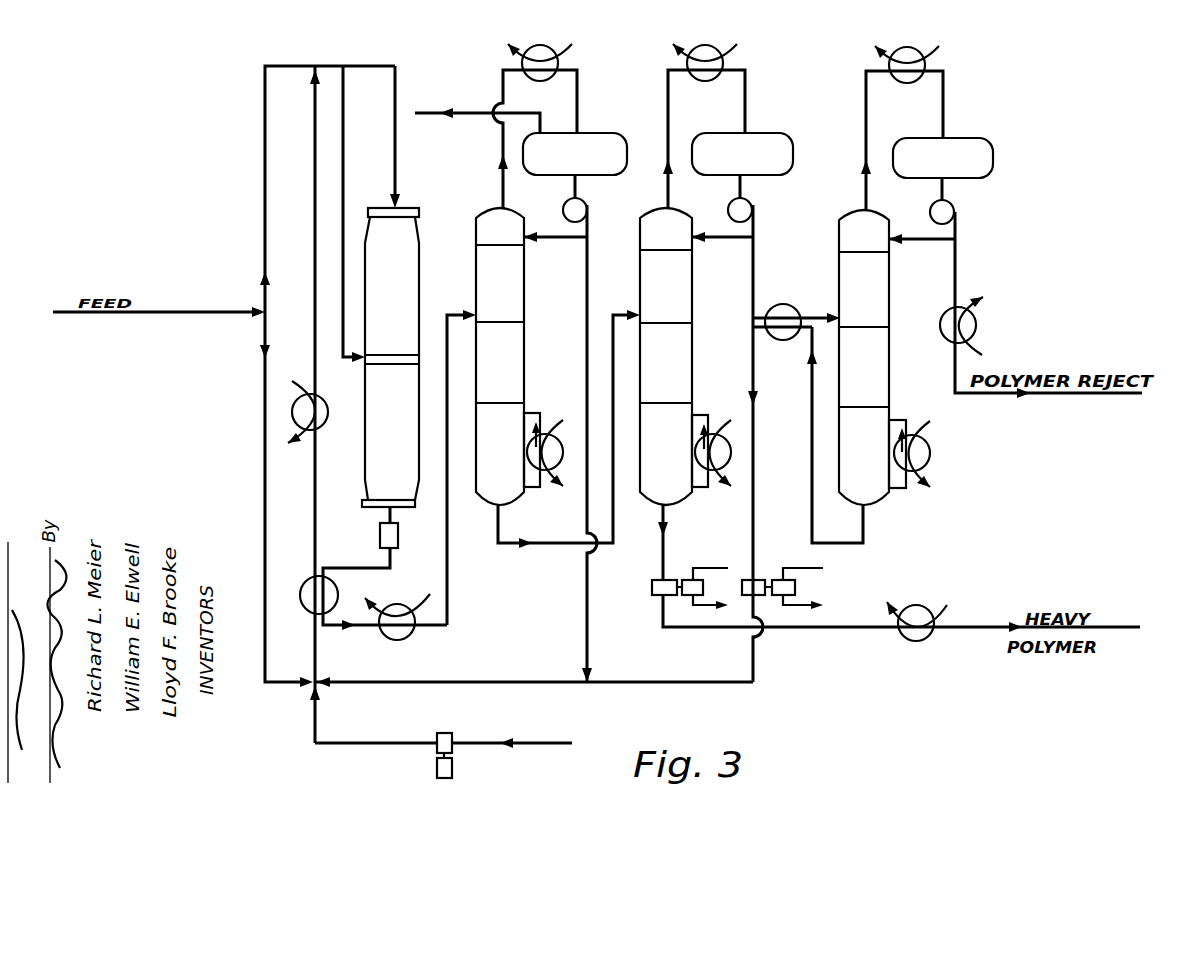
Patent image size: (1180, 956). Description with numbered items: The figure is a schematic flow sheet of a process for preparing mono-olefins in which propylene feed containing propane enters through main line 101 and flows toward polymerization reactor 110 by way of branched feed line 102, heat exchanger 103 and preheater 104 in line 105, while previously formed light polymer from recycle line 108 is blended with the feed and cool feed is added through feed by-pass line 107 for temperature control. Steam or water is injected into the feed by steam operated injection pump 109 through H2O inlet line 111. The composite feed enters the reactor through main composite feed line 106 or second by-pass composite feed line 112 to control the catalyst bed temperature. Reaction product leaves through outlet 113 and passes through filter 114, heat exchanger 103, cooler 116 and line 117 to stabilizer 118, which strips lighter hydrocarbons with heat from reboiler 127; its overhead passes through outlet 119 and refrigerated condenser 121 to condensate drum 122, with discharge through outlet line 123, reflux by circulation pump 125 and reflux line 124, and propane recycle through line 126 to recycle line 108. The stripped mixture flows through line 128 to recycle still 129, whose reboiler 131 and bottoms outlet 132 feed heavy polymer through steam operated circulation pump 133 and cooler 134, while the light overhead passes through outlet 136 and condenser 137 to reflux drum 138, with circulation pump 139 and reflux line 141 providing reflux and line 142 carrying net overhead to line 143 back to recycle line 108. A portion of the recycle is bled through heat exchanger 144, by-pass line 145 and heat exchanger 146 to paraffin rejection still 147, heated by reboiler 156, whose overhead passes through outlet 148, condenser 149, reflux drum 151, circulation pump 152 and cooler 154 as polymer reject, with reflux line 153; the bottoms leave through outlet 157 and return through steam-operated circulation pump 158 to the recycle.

The main line 101 is at (220, 310).
The branched feed line 102 is at (265, 470).
The heat exchanger 103 is at (308, 578).
The preheater 104 is at (325, 426).
The line 105 is at (315, 225).
The main composite feed line 106 is at (395, 152).
The feed by-pass line 107 is at (265, 158).
The recycle line 108 is at (452, 682).
The steam operated injection pump 109 is at (452, 735).
The polymerization reactor 110 is at (417, 276).
The H2O inlet line 111 is at (345, 743).
The second by-pass composite feed line 112 is at (343, 140).
The outlet 113 is at (398, 522).
The filter 114 is at (398, 548).
The cooler 116 is at (400, 641).
The line 117 is at (447, 597).
The stabilizer 118 is at (524, 366).
The outlet 119 is at (503, 187).
The refrigerated condenser 121 is at (548, 46).
The condensate drum 122 is at (590, 133).
The outlet line 123 is at (500, 112).
The valve-controlled reflux line 124 is at (566, 238).
The circulation pump 125 is at (587, 210).
The line 126 is at (587, 300).
The reboiler 127 is at (561, 490).
The line 128 is at (525, 548).
The recycle still 129 is at (692, 300).
The reboiler 131 is at (729, 490).
The outlet 132 is at (661, 562).
The steam operated circulation pump 133 is at (672, 580).
The cooler 134 is at (915, 641).
The outlet 136 is at (668, 88).
The condenser 137 is at (713, 46).
The reflux drum 138 is at (755, 133).
The circulation pump 139 is at (752, 210).
The valve-controlled reflux line 141 is at (738, 240).
The overhead product line 142 is at (753, 255).
The line 143 is at (753, 368).
The heat exchanger 144 is at (762, 331).
The by-pass line 145 is at (753, 327).
The heat exchanger 146 is at (803, 307).
The paraffin rejection still 147 is at (889, 300).
The outlet 148 is at (866, 148).
The condenser 149 is at (915, 48).
The reflux drum 151 is at (955, 138).
The circulation pump 152 is at (953, 212).
The valve-controlled reflux line 153 is at (936, 240).
The cooler 154 is at (976, 325).
The reboiler 156 is at (926, 491).
The outlet 157 is at (812, 445).
The steam-operated circulation pump 158 is at (757, 580).